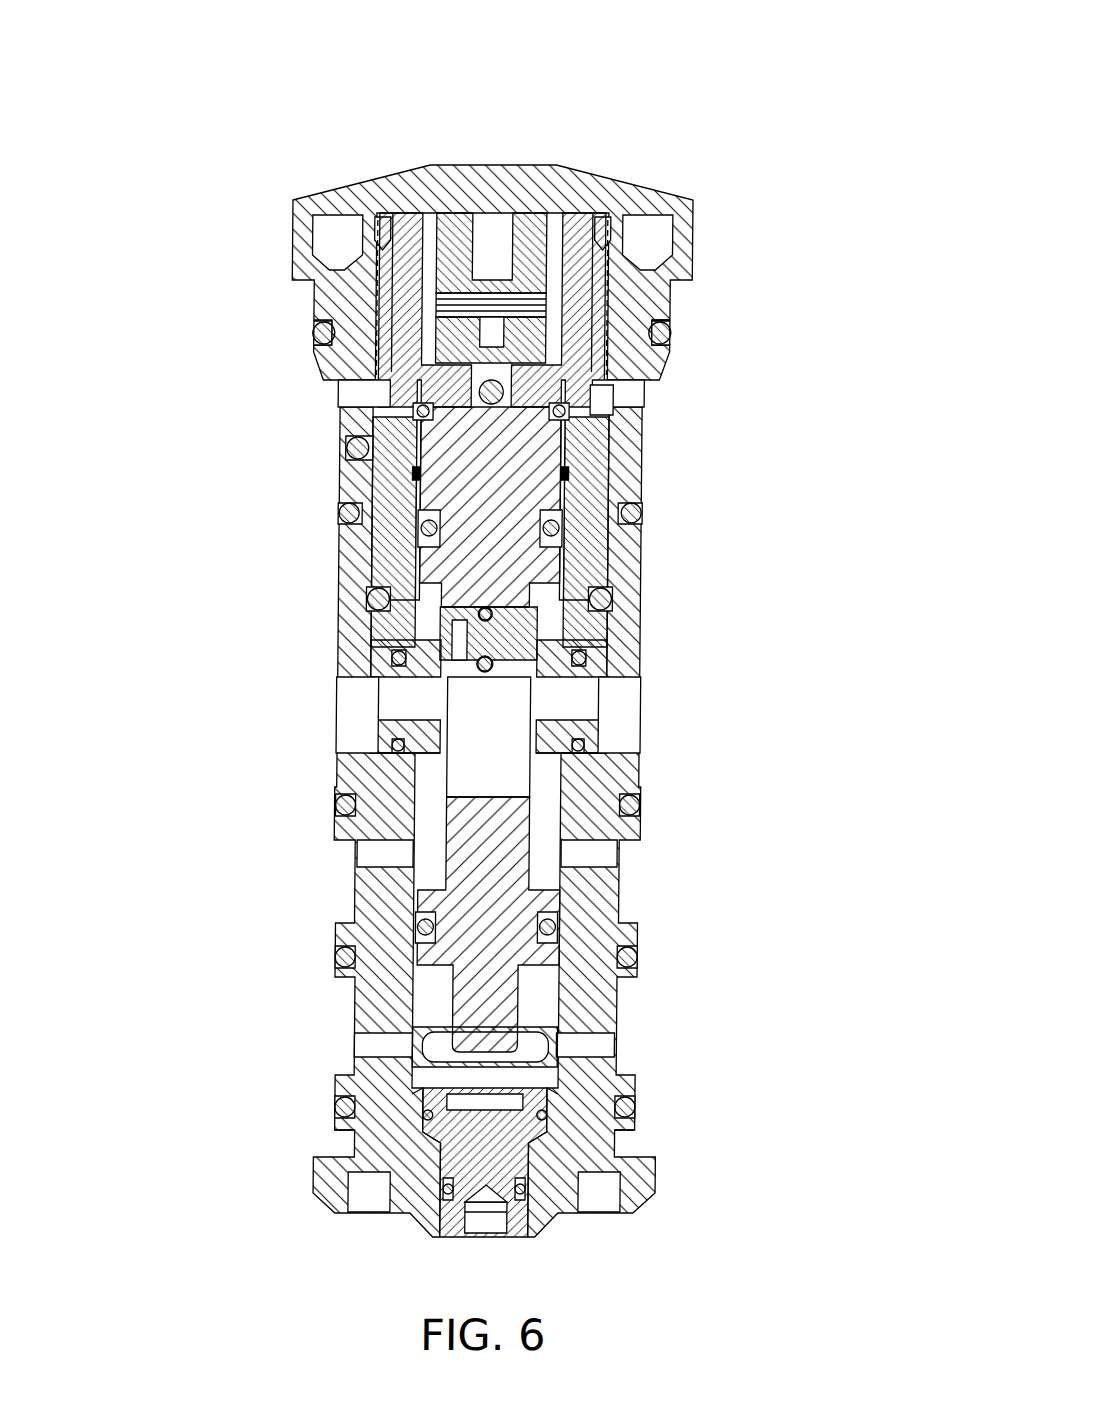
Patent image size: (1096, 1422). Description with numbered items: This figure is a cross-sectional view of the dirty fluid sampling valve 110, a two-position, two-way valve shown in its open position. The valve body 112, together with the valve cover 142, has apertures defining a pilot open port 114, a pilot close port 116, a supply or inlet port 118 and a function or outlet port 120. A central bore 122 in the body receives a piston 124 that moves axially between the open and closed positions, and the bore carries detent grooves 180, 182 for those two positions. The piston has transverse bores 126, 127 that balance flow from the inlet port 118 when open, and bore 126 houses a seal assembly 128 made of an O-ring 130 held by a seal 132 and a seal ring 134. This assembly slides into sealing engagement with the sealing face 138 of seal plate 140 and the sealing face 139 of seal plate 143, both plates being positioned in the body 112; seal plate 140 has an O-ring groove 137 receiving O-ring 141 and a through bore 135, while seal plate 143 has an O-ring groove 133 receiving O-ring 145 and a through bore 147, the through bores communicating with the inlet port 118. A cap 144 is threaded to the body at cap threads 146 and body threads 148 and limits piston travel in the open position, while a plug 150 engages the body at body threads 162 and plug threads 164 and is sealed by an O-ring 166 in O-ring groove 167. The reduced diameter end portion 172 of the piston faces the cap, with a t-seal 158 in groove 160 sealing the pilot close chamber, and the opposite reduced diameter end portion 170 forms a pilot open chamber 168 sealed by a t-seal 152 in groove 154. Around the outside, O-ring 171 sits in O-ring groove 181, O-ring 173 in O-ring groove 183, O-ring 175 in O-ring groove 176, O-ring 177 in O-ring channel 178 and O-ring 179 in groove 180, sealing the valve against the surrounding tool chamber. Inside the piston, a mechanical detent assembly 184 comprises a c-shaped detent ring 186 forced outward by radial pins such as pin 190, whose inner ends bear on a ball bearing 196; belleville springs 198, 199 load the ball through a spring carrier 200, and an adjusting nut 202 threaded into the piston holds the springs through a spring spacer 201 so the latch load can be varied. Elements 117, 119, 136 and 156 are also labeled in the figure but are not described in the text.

The dirty fluid sampling valve 110 is at (664, 106).
The valve body 112 is at (628, 900).
The pilot open port 114 is at (400, 1035).
The pilot close port 116 is at (642, 402).
The sleeve lower portion 117 is at (378, 607).
The inlet port 118 is at (352, 700).
The O-ring 119 is at (372, 592).
The outlet port 120 is at (566, 860).
The central bore 122 is at (538, 440).
The piston 124 is at (598, 437).
The transverse bore 126 is at (622, 612).
The transverse bore 127 is at (345, 805).
The seal assembly 128 is at (481, 594).
The O-ring 130 is at (494, 680).
The seal 132 is at (546, 640).
The O-ring groove 133 is at (644, 705).
The seal ring 134 is at (426, 725).
The through bore 135 is at (347, 720).
The plate 136 is at (398, 652).
The O-ring groove 137 is at (399, 746).
The sealing face 138 is at (397, 652).
The sealing face 139 is at (640, 660).
The seal plate 140 is at (350, 660).
The O-ring 141 is at (398, 770).
The valve cover 142 is at (345, 548).
The seal plate 143 is at (565, 645).
The cap 144 is at (700, 215).
The O-ring 145 is at (614, 757).
The cap threads 146 is at (660, 268).
The through bore 147 is at (596, 698).
The body threads 148 is at (585, 245).
The plug 150 is at (548, 1160).
The t-seal 152 is at (562, 935).
The groove 154 is at (644, 957).
The joint 156 is at (596, 840).
The t-seal 158 is at (560, 535).
The groove 160 is at (569, 593).
The body threads 162 is at (568, 1095).
The plug threads 164 is at (573, 1110).
The O-ring 166 is at (540, 1190).
The O-ring groove 167 is at (500, 1213).
The pilot open chamber 168 is at (446, 1000).
The reduced diameter end portion 170 is at (506, 1010).
The O-ring 171 is at (672, 333).
The reduced diameter end portion 172 is at (556, 213).
The O-ring 173 is at (638, 510).
The O-ring 175 is at (643, 810).
The O-ring groove 176 is at (616, 795).
The O-ring 177 is at (356, 962).
The O-ring channel 178 is at (366, 932).
The O-ring 179 is at (353, 1103).
The detent groove 180 is at (349, 393).
The O-ring groove 181 is at (665, 305).
The detent groove 182 is at (359, 513).
The O-ring groove 183 is at (630, 526).
The detent assembly 184 is at (396, 237).
The c-shaped detent ring 186 is at (354, 440).
The pin 190 is at (418, 474).
The ball bearing 196 is at (550, 395).
The belleville spring 198 is at (440, 300).
The belleville spring 199 is at (316, 337).
The spring carrier 200 is at (470, 345).
The spring spacer 201 is at (388, 237).
The adjusting nut 202 is at (455, 217).